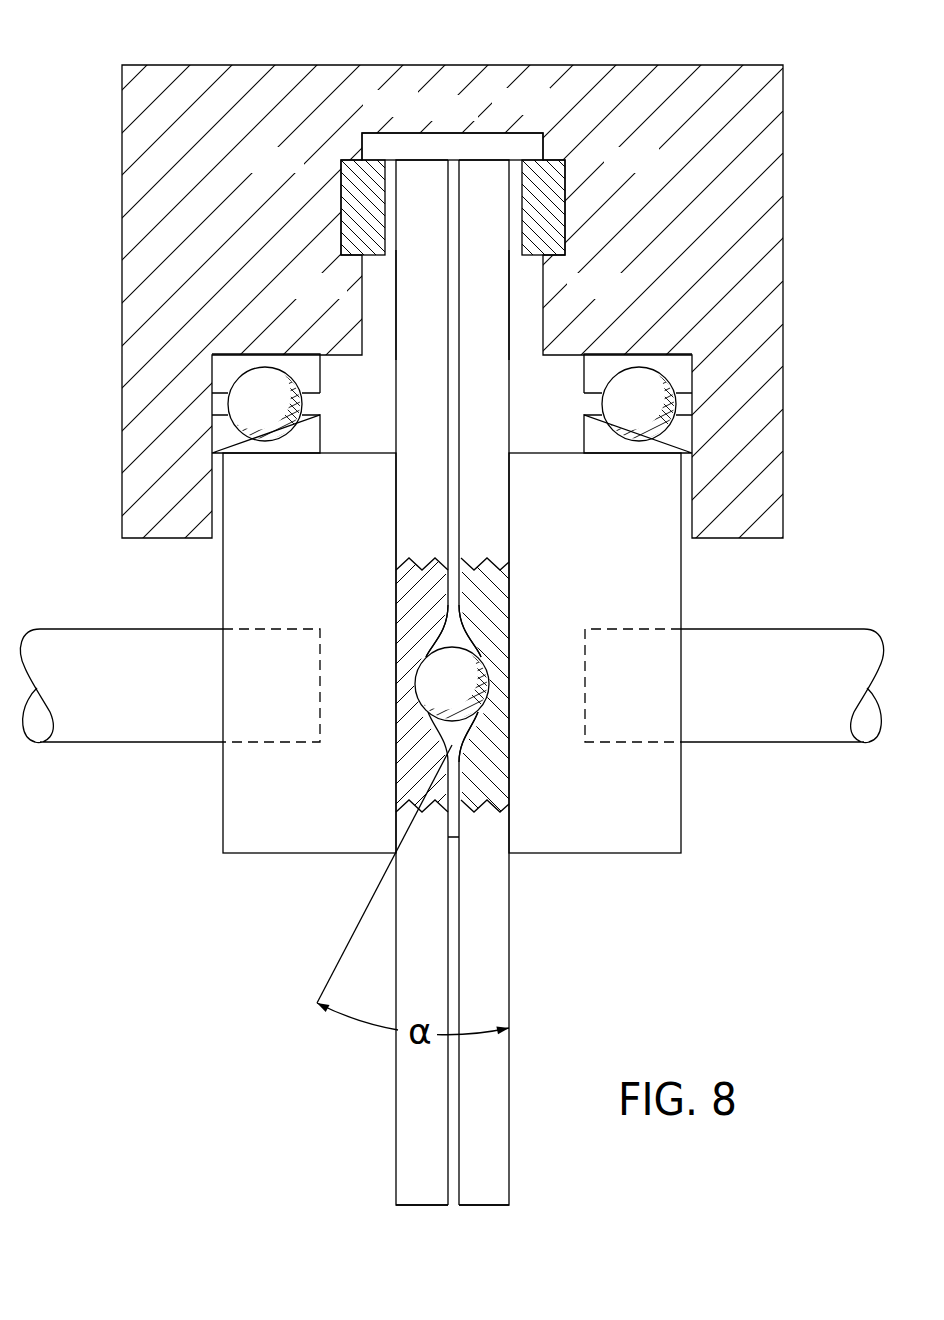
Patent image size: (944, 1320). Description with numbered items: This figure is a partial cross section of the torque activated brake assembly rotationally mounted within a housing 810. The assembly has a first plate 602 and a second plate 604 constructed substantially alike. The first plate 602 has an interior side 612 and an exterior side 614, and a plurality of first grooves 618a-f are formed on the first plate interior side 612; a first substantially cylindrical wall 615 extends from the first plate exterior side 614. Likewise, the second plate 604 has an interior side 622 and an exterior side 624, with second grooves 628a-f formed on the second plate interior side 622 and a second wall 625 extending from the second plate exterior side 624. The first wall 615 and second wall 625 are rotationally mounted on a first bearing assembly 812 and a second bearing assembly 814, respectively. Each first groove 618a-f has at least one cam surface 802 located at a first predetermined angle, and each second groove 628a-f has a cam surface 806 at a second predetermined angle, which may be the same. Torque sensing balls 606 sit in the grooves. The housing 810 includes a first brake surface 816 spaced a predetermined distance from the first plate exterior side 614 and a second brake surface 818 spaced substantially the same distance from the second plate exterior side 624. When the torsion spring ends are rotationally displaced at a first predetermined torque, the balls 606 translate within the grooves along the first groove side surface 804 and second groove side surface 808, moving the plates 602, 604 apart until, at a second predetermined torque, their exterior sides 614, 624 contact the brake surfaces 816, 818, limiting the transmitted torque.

The housing 810 is at (156, 77).
The first plate 602 is at (402, 158).
The second plate 604 is at (507, 158).
The first plate interior side 612 is at (460, 160).
The first brake surface 816 is at (341, 165).
The second brake surface 818 is at (565, 165).
The first plate exterior side 614 is at (396, 297).
The second plate exterior side 624 is at (509, 297).
The first bearing assembly 812 is at (310, 375).
The second bearing assembly 814 is at (596, 375).
The first wall 615 is at (223, 576).
The second wall 625 is at (681, 576).
The first grooves 618a-f is at (467, 597).
The second grooves 628a-f is at (462, 655).
The torque sensing balls 606 is at (427, 668).
The first groove cam surface 802 is at (417, 682).
The second groove cam surface 806 is at (488, 682).
The first groove side surface 804 is at (397, 768).
The second groove side surface 808 is at (509, 765).
The second plate interior side 622 is at (452, 1206).